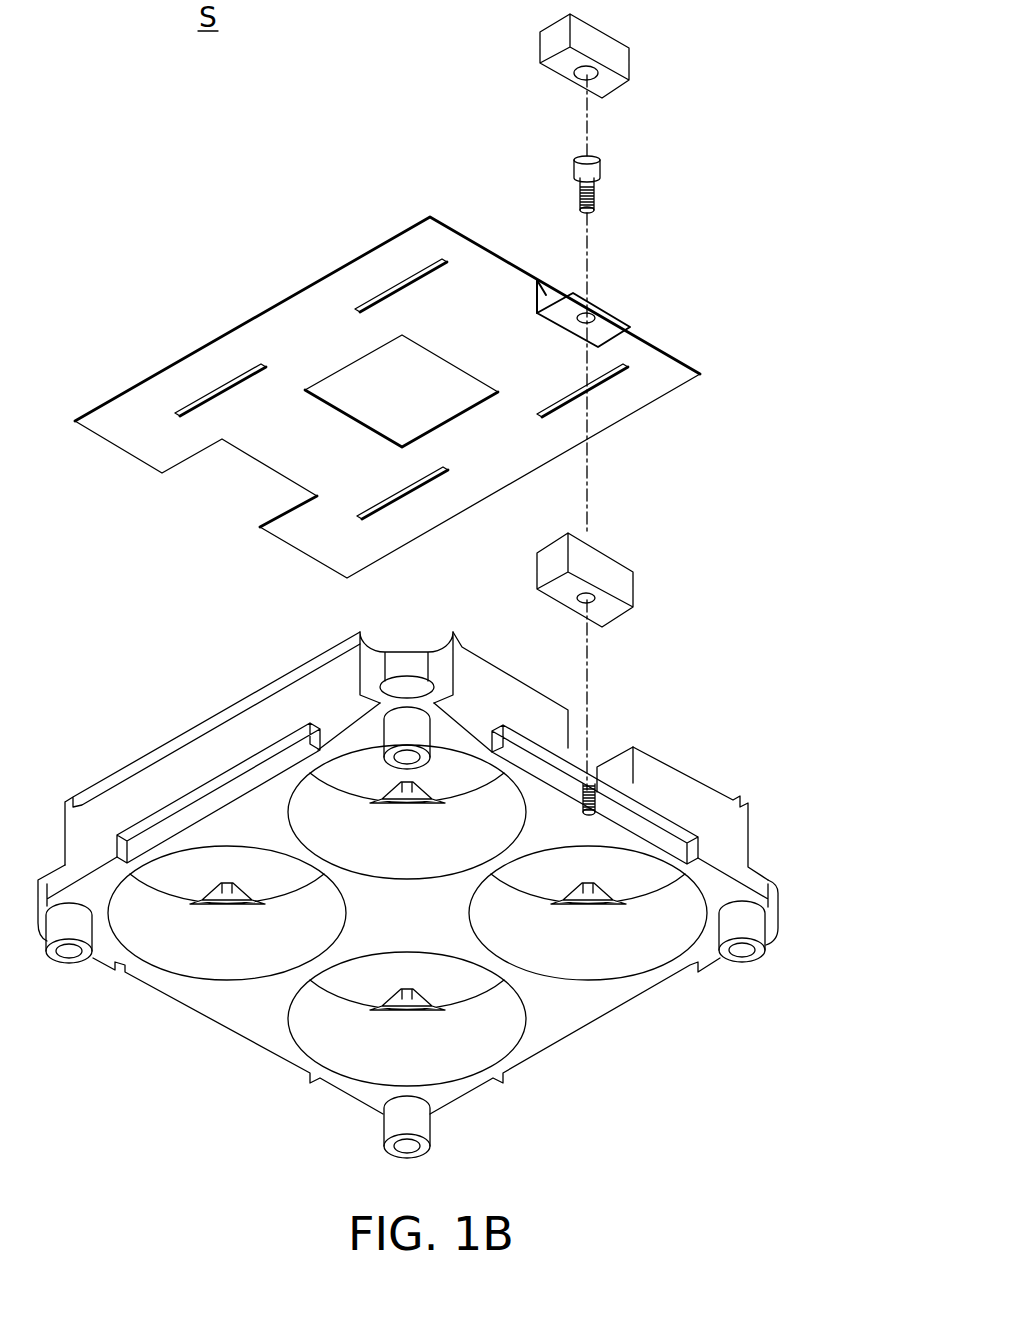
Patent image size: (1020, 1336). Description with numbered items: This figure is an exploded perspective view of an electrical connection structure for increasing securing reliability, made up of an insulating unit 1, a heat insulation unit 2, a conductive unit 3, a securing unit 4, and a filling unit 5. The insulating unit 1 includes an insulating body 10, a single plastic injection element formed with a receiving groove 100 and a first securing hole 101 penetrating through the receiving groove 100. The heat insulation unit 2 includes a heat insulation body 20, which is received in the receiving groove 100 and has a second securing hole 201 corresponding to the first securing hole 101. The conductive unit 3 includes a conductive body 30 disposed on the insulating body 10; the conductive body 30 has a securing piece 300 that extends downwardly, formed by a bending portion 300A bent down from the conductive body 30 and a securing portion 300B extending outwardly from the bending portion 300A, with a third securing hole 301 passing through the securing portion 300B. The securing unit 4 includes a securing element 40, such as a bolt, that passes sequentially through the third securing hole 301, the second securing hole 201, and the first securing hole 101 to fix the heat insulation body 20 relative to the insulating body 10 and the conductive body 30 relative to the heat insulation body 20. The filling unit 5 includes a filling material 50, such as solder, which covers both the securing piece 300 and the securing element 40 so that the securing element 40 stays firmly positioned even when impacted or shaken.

The insulating unit 1 is at (450, 895).
The insulating body 10 is at (435, 895).
The receiving groove 100 is at (600, 748).
The first securing hole 101 is at (585, 803).
The heat insulation unit 2 is at (628, 600).
The heat insulation body 20 is at (600, 553).
The second securing hole 201 is at (589, 602).
The conductive unit 3 is at (433, 397).
The conductive body 30 is at (638, 392).
The securing piece 300 is at (664, 314).
The bending portion 300A is at (545, 292).
The securing portion 300B is at (612, 312).
The third securing hole 301 is at (590, 322).
The securing unit 4 is at (644, 184).
The securing element 40 is at (600, 182).
The filling unit 5 is at (643, 56).
The filling material 50 is at (617, 63).